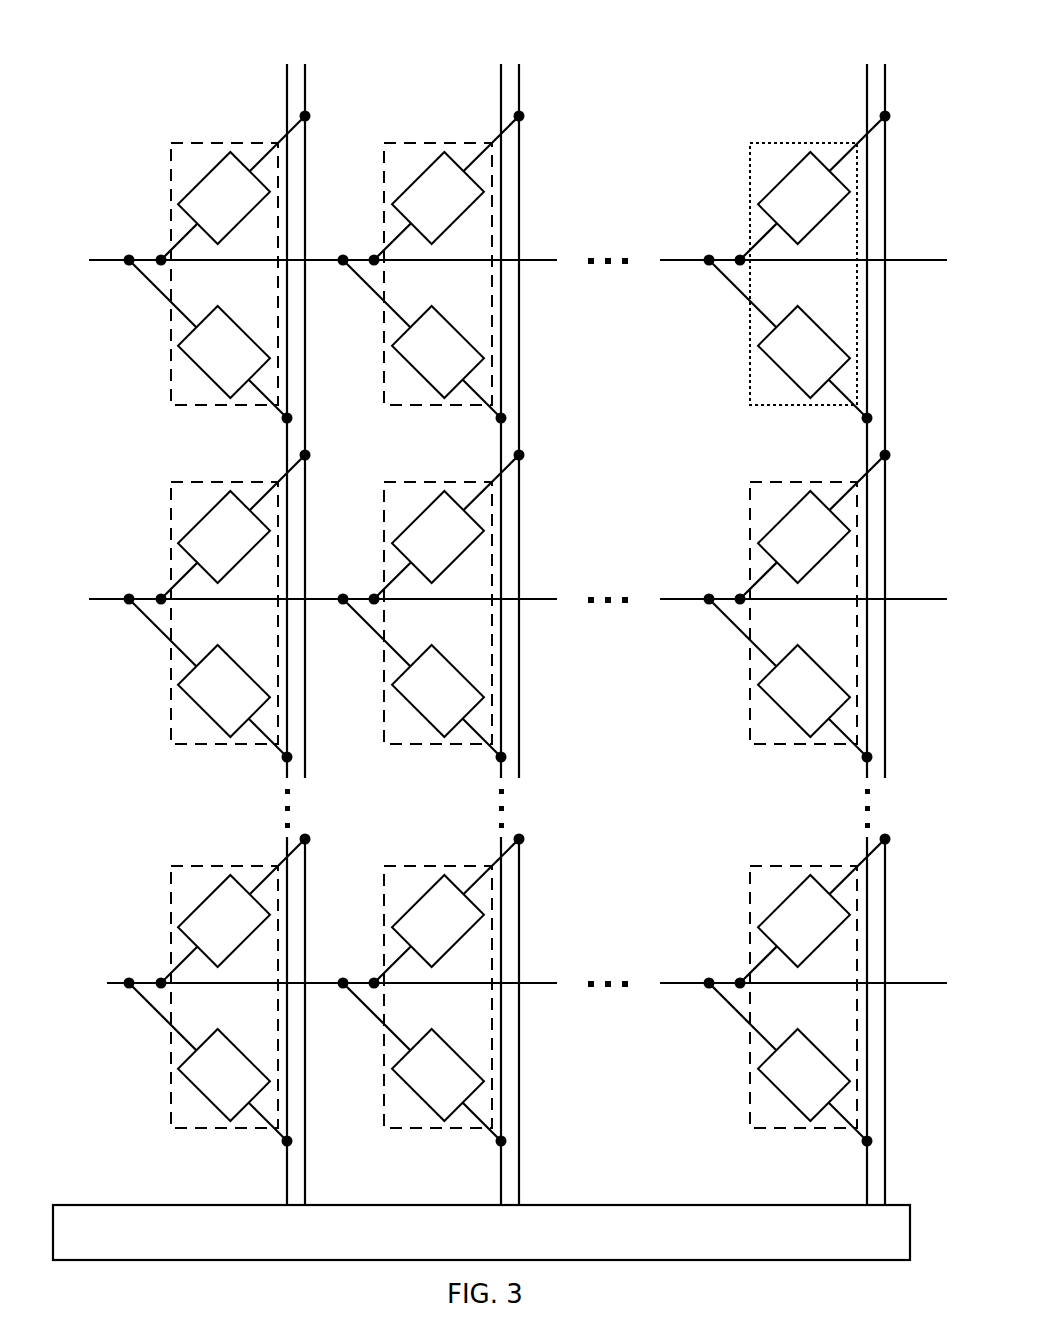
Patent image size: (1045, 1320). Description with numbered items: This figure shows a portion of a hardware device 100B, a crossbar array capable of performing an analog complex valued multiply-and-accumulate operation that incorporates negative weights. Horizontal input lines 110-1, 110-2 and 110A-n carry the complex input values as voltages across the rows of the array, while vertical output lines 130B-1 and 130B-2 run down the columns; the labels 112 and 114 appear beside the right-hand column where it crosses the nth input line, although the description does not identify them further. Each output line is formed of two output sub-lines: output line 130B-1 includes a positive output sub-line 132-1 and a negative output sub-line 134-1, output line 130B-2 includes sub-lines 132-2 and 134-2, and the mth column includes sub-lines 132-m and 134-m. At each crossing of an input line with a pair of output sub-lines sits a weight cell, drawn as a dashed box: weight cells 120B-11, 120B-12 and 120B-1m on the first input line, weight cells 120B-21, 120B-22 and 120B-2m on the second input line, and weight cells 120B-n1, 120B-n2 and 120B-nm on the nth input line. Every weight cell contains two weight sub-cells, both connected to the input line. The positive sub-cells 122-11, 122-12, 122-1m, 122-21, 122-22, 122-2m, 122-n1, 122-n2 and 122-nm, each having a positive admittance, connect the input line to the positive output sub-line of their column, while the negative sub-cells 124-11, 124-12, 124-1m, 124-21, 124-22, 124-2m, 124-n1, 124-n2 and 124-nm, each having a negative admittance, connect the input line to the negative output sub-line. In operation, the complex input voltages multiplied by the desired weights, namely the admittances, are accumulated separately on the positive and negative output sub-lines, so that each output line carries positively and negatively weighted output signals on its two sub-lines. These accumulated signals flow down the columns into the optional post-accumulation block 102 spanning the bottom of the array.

The hardware device 100B is at (122, 23).
The optional post-accumulation block 102 is at (481, 1232).
The input line 110-1 is at (117, 258).
The input line 110-2 is at (117, 597).
The input line 110A-n is at (102, 975).
The row line segment 112 is at (886, 982).
The column line segment 114 is at (886, 984).
The weight cell 120B-11 is at (170, 365).
The weight cell 120B-12 is at (384, 365).
The weight cell 120B-1m is at (750, 365).
The weight cell 120B-21 is at (170, 705).
The weight cell 120B-22 is at (384, 705).
The weight cell 120B-2m is at (750, 705).
The weight cell 120B-n1 is at (170, 1090).
The weight cell 120B-n2 is at (384, 1090).
The weight cell 120B-nm is at (750, 1090).
The positive sub-cell 122-11 is at (200, 182).
The positive sub-cell 122-12 is at (414, 182).
The positive sub-cell 122-1m is at (780, 182).
The positive sub-cell 122-21 is at (200, 521).
The positive sub-cell 122-22 is at (414, 521).
The positive sub-cell 122-2m is at (780, 521).
The positive sub-cell 122-n1 is at (200, 905).
The positive sub-cell 122-n2 is at (414, 905).
The positive sub-cell 122-nm is at (780, 905).
The negative sub-cell 124-11 is at (178, 346).
The negative sub-cell 124-12 is at (484, 358).
The negative sub-cell 124-1m is at (758, 346).
The negative sub-cell 124-21 is at (178, 685).
The negative sub-cell 124-22 is at (485, 697).
The negative sub-cell 124-2m is at (758, 685).
The negative sub-cell 124-n1 is at (178, 1069).
The negative sub-cell 124-n2 is at (484, 1081).
The negative sub-cell 124-nm is at (758, 1069).
The output line 130B-1 is at (402, 609).
The output line 130B-2 is at (592, 606).
The positive output sub-line 132-1 is at (287, 113).
The positive output sub-line 132-2 is at (501, 97).
The positive output sub-line 132-m is at (867, 115).
The negative output sub-line 134-1 is at (473, 628).
The negative output sub-line 134-2 is at (305, 960).
The negative output sub-line 134-m is at (885, 100).